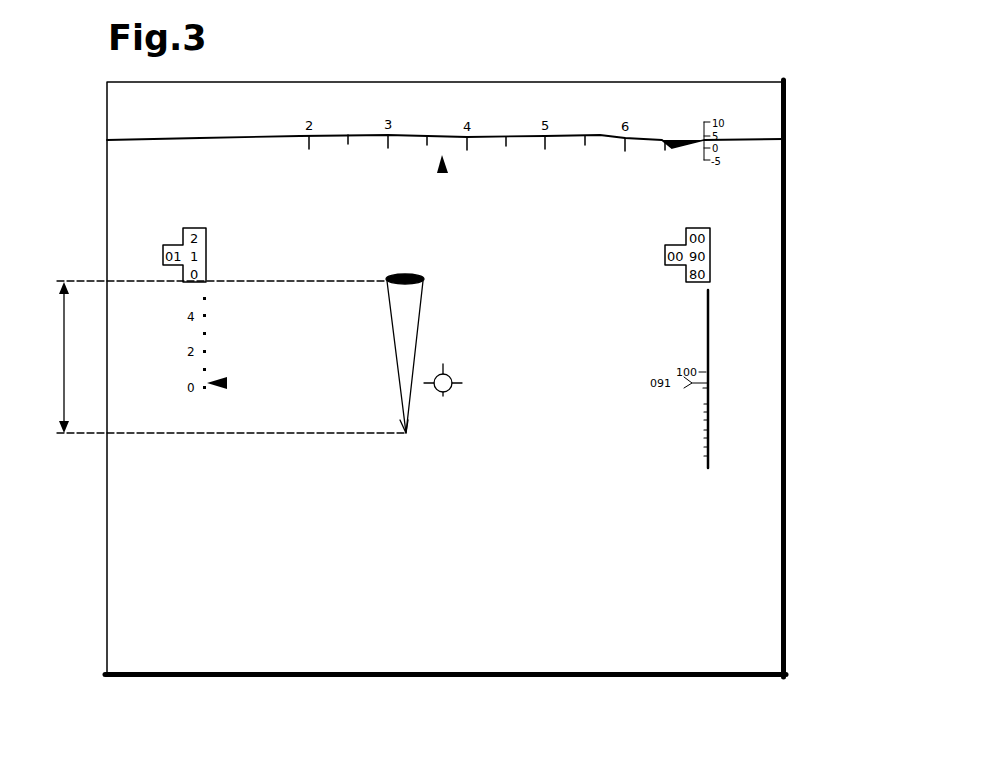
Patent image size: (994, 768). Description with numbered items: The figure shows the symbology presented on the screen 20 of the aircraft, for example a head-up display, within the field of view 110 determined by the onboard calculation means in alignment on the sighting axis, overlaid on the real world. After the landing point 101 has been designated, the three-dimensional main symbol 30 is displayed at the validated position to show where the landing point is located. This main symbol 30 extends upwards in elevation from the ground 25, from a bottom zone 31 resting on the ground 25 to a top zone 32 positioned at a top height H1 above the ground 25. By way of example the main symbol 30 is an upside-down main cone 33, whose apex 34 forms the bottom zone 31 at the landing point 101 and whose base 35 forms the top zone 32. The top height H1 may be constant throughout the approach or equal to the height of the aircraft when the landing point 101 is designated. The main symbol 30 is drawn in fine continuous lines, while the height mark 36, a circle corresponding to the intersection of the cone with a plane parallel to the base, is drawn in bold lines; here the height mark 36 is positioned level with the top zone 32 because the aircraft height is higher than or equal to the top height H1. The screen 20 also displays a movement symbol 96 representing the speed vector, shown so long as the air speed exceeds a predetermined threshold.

The screen 20 is at (472, 386).
The field of view 110 is at (472, 386).
The landing point 101 is at (107, 533).
The ground 25 is at (465, 598).
The top zone 32 is at (376, 152).
The base 35 is at (376, 152).
The height mark 36 is at (404, 273).
The three-dimensional main symbol 30 is at (439, 275).
The main cone 33 is at (439, 275).
The bottom zone 31 is at (370, 475).
The apex 34 is at (406, 433).
The movement symbol 96 is at (450, 394).
The top height H1 is at (213, 357).